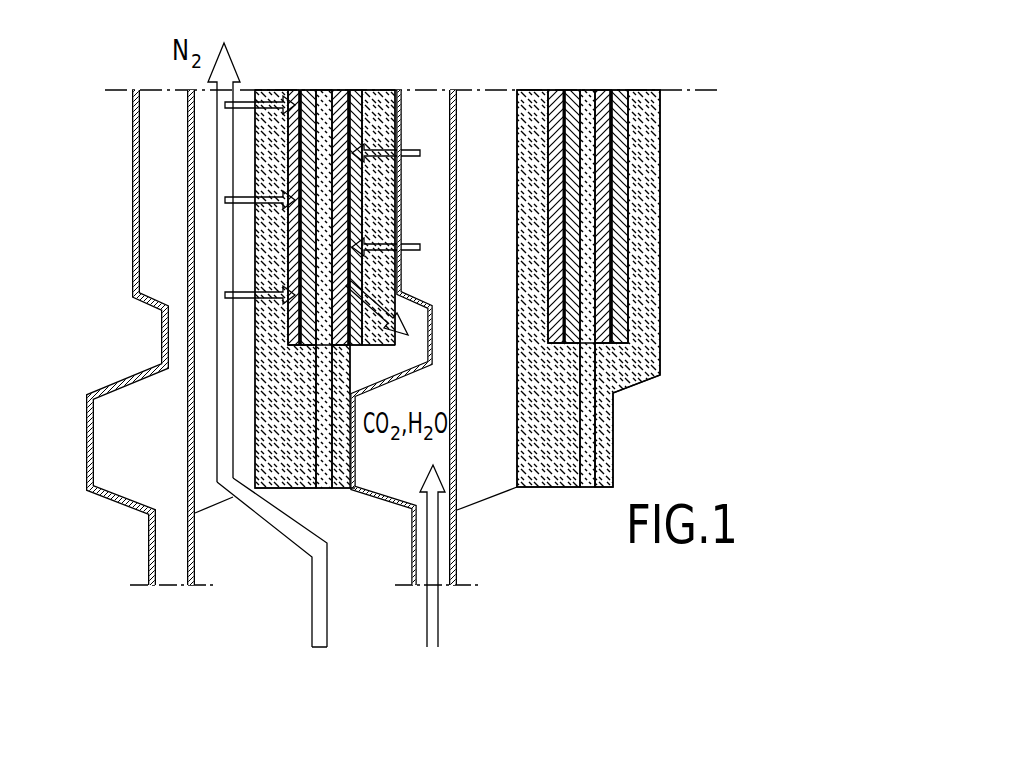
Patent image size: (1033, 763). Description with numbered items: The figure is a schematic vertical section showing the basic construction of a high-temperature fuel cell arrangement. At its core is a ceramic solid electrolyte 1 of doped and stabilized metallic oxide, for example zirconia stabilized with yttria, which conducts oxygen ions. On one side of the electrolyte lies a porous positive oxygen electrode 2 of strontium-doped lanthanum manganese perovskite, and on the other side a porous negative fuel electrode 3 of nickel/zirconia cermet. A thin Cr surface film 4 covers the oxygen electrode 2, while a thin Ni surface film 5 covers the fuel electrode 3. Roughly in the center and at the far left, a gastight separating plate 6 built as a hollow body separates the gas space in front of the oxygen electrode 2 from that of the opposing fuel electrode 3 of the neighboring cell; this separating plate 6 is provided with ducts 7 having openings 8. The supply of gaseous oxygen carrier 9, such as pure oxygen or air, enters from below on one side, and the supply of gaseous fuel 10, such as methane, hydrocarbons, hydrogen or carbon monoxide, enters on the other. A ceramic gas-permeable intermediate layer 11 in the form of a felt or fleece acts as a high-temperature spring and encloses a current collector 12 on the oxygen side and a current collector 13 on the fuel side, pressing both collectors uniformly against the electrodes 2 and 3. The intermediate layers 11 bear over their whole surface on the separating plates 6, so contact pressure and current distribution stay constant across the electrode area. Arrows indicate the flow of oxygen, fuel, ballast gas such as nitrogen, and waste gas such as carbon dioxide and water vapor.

The ceramic solid electrolyte 1 is at (320, 410).
The oxygen electrode 2 is at (325, 338).
The fuel electrode 3 is at (305, 328).
The Cr surface film 4 is at (298, 90).
The Ni surface film 5 is at (350, 90).
The gastight separating plate 6 is at (190, 490).
The ducts 7 is at (154, 200).
The openings 8 is at (136, 251).
The supply of gaseous oxygen carrier 9 is at (322, 648).
The supply of gaseous fuel 10 is at (433, 648).
The gas-permeable intermediate layer 11 is at (565, 458).
The current collector on the oxygen side 12 is at (553, 90).
The current collector on the fuel side 13 is at (620, 90).